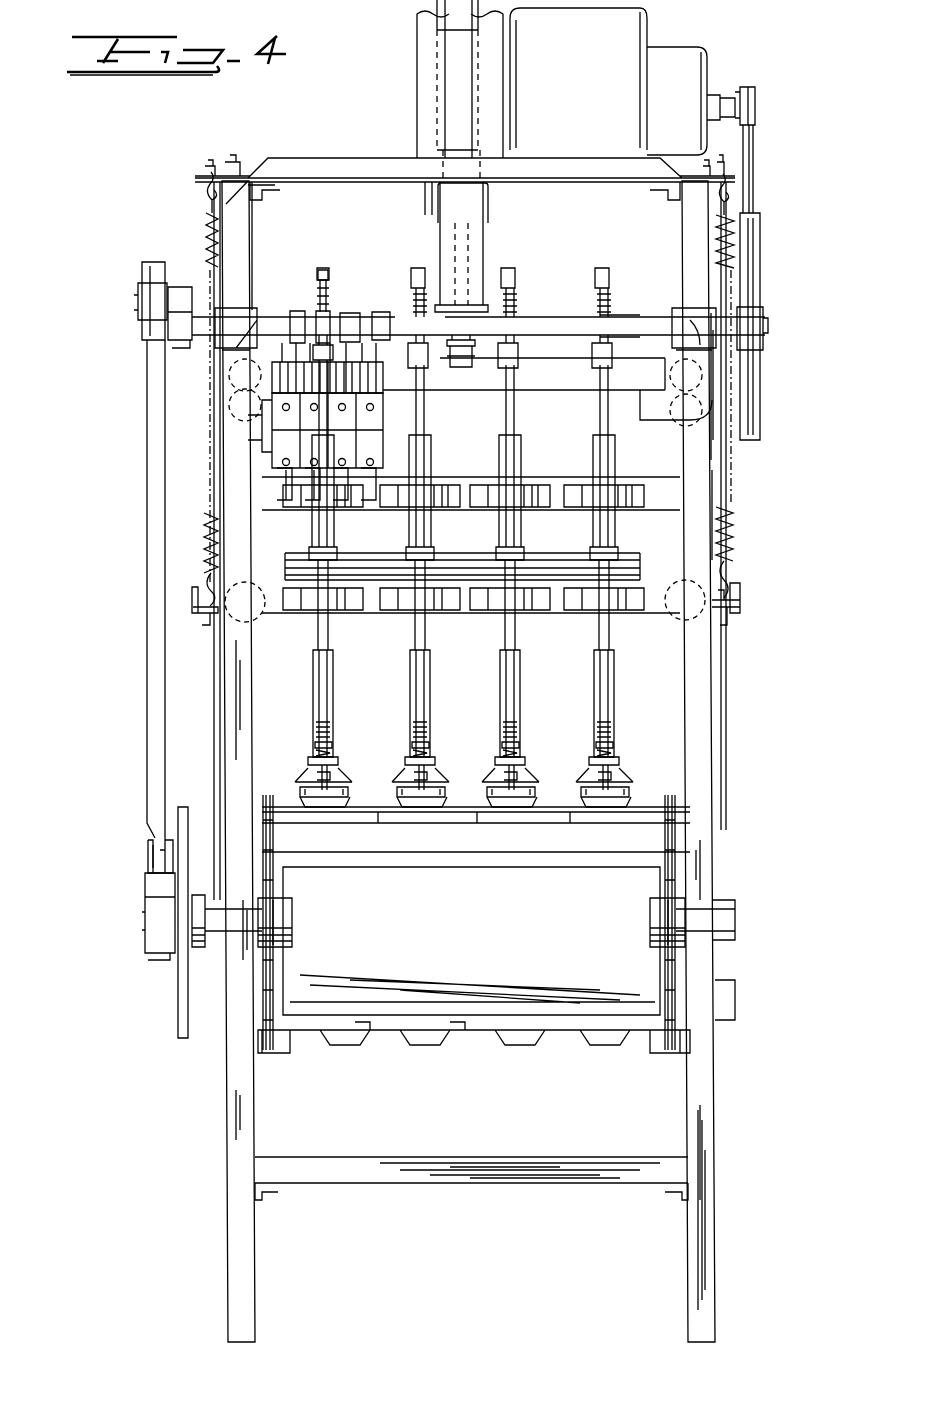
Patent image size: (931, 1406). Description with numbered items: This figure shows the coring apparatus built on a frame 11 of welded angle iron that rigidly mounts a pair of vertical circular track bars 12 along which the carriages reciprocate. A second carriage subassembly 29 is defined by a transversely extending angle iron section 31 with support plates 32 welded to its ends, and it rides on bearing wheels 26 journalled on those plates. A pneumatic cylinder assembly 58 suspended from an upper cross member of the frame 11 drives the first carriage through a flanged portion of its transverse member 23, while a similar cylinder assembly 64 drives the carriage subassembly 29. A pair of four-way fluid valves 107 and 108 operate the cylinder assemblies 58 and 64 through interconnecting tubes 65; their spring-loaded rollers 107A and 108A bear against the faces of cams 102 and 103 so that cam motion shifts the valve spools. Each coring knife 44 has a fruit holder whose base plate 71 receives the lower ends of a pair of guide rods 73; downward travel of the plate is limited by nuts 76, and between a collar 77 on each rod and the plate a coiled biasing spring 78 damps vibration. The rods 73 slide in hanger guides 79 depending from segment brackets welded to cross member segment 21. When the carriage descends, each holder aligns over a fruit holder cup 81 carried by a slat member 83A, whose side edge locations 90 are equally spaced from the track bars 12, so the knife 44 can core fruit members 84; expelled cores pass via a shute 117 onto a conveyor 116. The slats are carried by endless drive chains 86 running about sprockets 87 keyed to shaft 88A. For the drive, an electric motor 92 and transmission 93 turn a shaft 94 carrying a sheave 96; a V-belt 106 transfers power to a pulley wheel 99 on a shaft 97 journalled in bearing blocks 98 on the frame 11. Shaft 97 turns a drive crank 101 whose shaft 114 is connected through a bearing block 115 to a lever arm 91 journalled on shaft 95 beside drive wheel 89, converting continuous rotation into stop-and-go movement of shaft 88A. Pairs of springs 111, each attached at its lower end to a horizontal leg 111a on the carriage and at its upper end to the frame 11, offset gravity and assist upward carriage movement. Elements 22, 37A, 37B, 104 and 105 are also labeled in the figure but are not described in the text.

The frame 11 is at (305, 168).
The track bars 12 is at (218, 712).
The cross member segment 21 is at (640, 625).
The cross rail 22 is at (664, 502).
The transverse member 23 is at (545, 315).
The bearing wheels 26 is at (758, 323).
The second carriage subassembly 29 is at (556, 384).
The angle iron section 31 is at (470, 372).
The support plates 32 is at (658, 412).
The upper guide block 37A is at (497, 488).
The lower guide block 37B is at (490, 608).
The coring knife 44 is at (336, 700).
The pneumatic cylinder assembly 58 is at (446, 76).
The cylinder assembly 64 is at (483, 248).
The interconnecting tubes 65 is at (428, 218).
The base plate 71 is at (432, 764).
The guide rods 73 is at (318, 688).
The nuts 76 is at (340, 770).
The collar 77 is at (330, 742).
The coiled biasing spring 78 is at (334, 752).
The hanger guides 79 is at (336, 640).
The fruit holder cup 81 is at (336, 808).
The slat member 83A is at (455, 802).
The fruit members 84 is at (532, 792).
The endless drive chains 86 is at (286, 1044).
The sprockets 87 is at (276, 985).
The shaft 88A is at (594, 918).
The drive wheel 89 is at (180, 1000).
The locations 90 is at (288, 805).
The lever arm 91 is at (150, 720).
The electric motor 92 is at (635, 32).
The transmission 93 is at (705, 62).
The shaft 94 is at (733, 98).
The shaft 95 is at (147, 856).
The sheave 96 is at (757, 102).
The shaft 97 is at (636, 318).
The bearing blocks 98 is at (232, 318).
The pulley wheel 99 is at (761, 398).
The drive crank 101 is at (180, 290).
The cam 102 is at (300, 312).
The cam 103 is at (326, 312).
The cam ring 104 is at (358, 316).
The shaft 105 is at (480, 332).
The V-belt 106 is at (757, 166).
The four-way fluid valve 107 is at (290, 448).
The roller 107A is at (283, 350).
The four-way fluid valve 108 is at (312, 433).
The roller 108A is at (334, 340).
The springs 111 is at (205, 538).
The horizontal leg 111a is at (200, 616).
The shaft 114 is at (140, 302).
The bearing block 115 is at (148, 318).
The conveyor 116 is at (532, 976).
The shute 117 is at (468, 899).